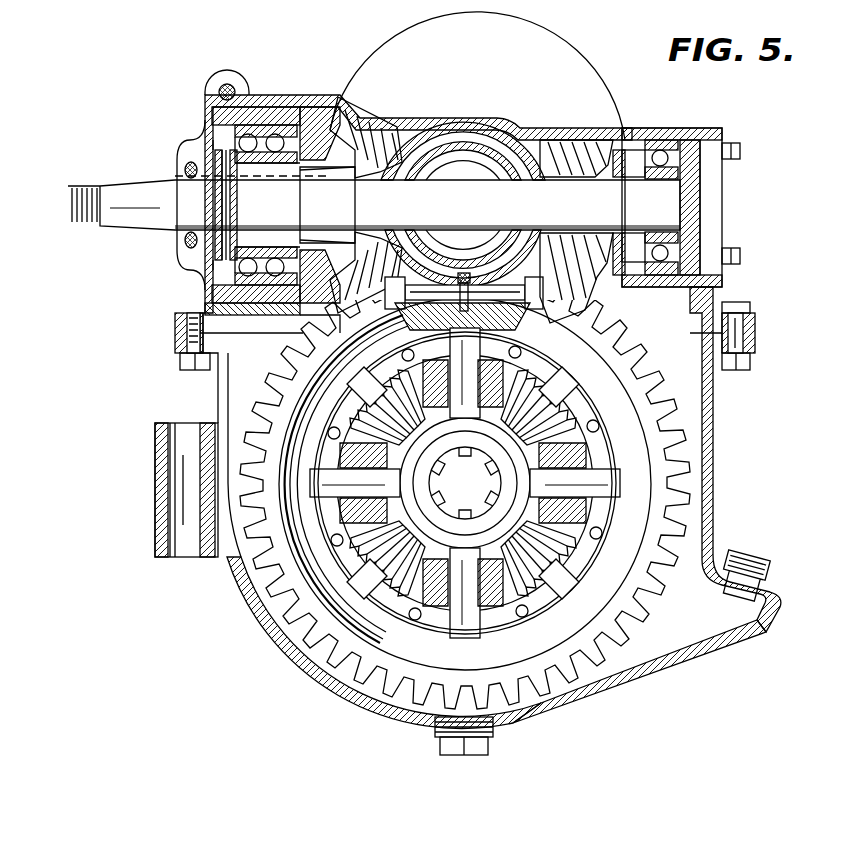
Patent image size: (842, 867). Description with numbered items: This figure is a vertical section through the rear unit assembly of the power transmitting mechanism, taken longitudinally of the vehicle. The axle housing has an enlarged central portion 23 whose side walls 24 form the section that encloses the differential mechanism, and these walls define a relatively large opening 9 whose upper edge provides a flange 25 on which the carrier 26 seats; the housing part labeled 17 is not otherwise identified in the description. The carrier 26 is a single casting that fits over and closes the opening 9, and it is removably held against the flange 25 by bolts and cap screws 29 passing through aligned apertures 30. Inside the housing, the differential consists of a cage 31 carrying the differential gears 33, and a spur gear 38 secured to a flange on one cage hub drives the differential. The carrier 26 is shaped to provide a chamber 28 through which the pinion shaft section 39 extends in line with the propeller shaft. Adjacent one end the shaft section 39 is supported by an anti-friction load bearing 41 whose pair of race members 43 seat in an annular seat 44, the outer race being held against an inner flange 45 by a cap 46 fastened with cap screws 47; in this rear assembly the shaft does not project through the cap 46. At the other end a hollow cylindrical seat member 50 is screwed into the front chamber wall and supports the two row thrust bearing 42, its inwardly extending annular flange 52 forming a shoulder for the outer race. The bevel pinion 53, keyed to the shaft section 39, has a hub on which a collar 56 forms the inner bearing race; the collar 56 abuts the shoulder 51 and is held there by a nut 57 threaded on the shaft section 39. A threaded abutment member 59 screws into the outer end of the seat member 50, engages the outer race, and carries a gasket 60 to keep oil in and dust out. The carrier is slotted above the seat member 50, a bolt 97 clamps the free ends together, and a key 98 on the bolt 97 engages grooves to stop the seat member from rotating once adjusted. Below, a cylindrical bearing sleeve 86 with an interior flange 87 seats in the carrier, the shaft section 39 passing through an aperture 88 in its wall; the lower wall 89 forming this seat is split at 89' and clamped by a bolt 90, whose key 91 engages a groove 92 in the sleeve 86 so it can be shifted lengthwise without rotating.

The opening 9 is at (665, 328).
The axle housing tube 17 is at (155, 502).
The central portion 23 is at (318, 680).
The side walls 24 is at (713, 410).
The flanges 25 is at (175, 346).
The carrier 26 is at (560, 55).
The chamber 28 is at (582, 158).
The bolts and cap screws 29 is at (185, 370).
The apertures 30 is at (187, 318).
The cage 31 is at (362, 580).
The differential gears 33 is at (540, 580).
The spur gear 38 is at (670, 575).
The pinion shaft section 39 is at (374, 203).
The load bearing 41 is at (678, 287).
The two row bearing 42 is at (272, 135).
The race members 43 is at (650, 140).
The annular seat 44 is at (665, 266).
The inner flange 45 is at (622, 276).
The cap 46 is at (700, 180).
The cap screws 47 is at (740, 150).
The hollow cylindrical member 50 is at (275, 318).
The shoulder 51 is at (318, 160).
The annular flange 52 is at (308, 112).
The bevel pinion 53 is at (350, 130).
The collar 56 is at (318, 282).
The nut 57 is at (218, 258).
The abutment member 59 is at (208, 132).
The gasket 60 is at (185, 165).
The bearing sleeve 86 is at (463, 249).
The flange 87 is at (463, 258).
The aperture 88 is at (463, 151).
The lower wall 89 is at (465, 483).
The split 89' is at (465, 483).
The bolt 90 is at (390, 343).
The key 91 is at (464, 273).
The groove 92 is at (455, 285).
The bolt 97 is at (228, 84).
The key 98 is at (248, 92).